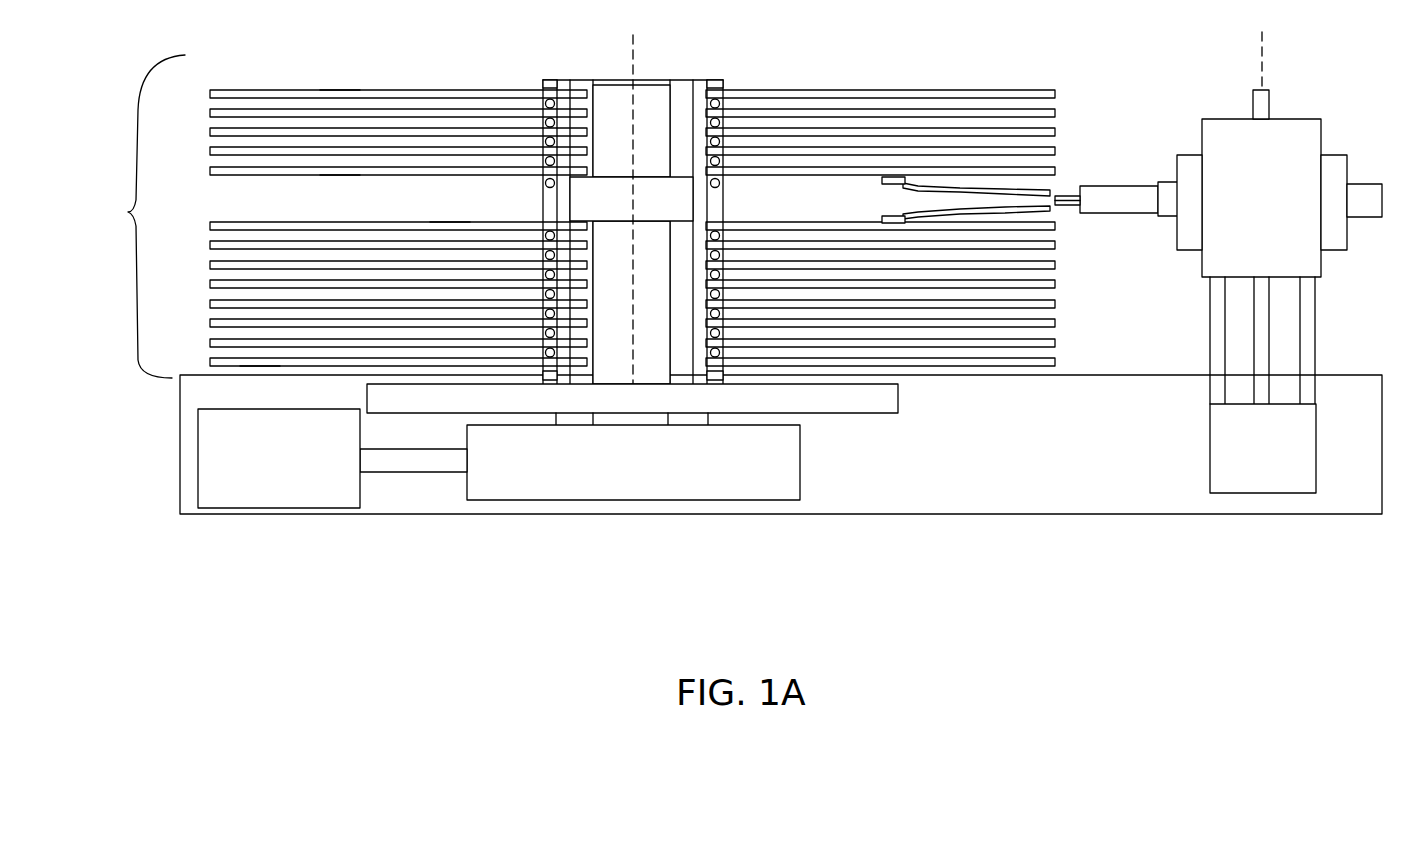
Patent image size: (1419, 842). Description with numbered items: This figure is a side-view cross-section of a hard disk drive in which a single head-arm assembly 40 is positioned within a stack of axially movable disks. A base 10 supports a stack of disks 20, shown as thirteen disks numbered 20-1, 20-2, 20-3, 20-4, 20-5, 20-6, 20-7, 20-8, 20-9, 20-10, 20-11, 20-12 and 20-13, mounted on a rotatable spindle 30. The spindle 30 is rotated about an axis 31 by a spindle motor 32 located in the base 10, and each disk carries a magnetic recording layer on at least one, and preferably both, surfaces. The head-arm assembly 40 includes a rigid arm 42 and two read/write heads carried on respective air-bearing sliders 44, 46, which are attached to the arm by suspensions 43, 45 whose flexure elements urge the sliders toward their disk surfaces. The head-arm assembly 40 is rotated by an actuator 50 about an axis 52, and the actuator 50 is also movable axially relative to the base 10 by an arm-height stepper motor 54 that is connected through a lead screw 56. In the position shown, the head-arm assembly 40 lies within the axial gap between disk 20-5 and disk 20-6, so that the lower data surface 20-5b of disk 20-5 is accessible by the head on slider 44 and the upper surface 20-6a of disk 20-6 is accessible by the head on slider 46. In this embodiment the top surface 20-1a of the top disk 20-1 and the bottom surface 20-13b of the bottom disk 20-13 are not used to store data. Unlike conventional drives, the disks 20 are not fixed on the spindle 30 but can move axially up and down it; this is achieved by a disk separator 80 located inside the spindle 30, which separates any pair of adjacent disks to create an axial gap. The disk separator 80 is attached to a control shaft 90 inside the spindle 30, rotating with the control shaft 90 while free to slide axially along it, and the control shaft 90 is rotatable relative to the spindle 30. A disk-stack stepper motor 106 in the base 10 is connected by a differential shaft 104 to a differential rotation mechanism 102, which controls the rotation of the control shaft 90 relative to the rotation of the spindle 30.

The base 10 is at (1010, 514).
The stack of disks 20 is at (345, 227).
The top disk 20-1 is at (210, 93).
The disk 20-2 is at (210, 111).
The disk 20-3 is at (210, 131).
The disk 20-4 is at (210, 151).
The disk 20-5 is at (210, 173).
The disk 20-6 is at (210, 226).
The disk 20-7 is at (210, 246).
The disk 20-8 is at (210, 265).
The disk 20-9 is at (210, 285).
The disk 20-10 is at (210, 304).
The disk 20-11 is at (210, 323).
The disk 20-12 is at (210, 343).
The bottom disk 20-13 is at (210, 362).
The top surface of the top disk 20-1a is at (331, 89).
The lower data surface of disk 20-5 20-5b is at (331, 176).
The upper surface of disk 20-6 20-6a is at (452, 222).
The bottom surface of the bottom disk 20-13b is at (265, 368).
The rotatable spindle 30 is at (678, 80).
The axis 31 is at (633, 57).
The spindle motor 32 is at (880, 413).
The head-arm assembly 40 is at (1173, 77).
The rigid arm 42 is at (1148, 186).
The suspension 43 is at (1050, 190).
The air-bearing slider 44 is at (882, 182).
The suspension 45 is at (1050, 207).
The air-bearing slider 46 is at (882, 218).
The actuator 50 is at (1296, 80).
The axis 52 is at (1262, 52).
The arm-height stepper motor 54 is at (1316, 443).
The lead screw 56 is at (1270, 330).
The disk separator 80 is at (585, 207).
The control shaft 90 is at (612, 93).
The differential rotation mechanism 102 is at (633, 500).
The differential shaft 104 is at (392, 473).
The disk-stack stepper motor 106 is at (290, 409).